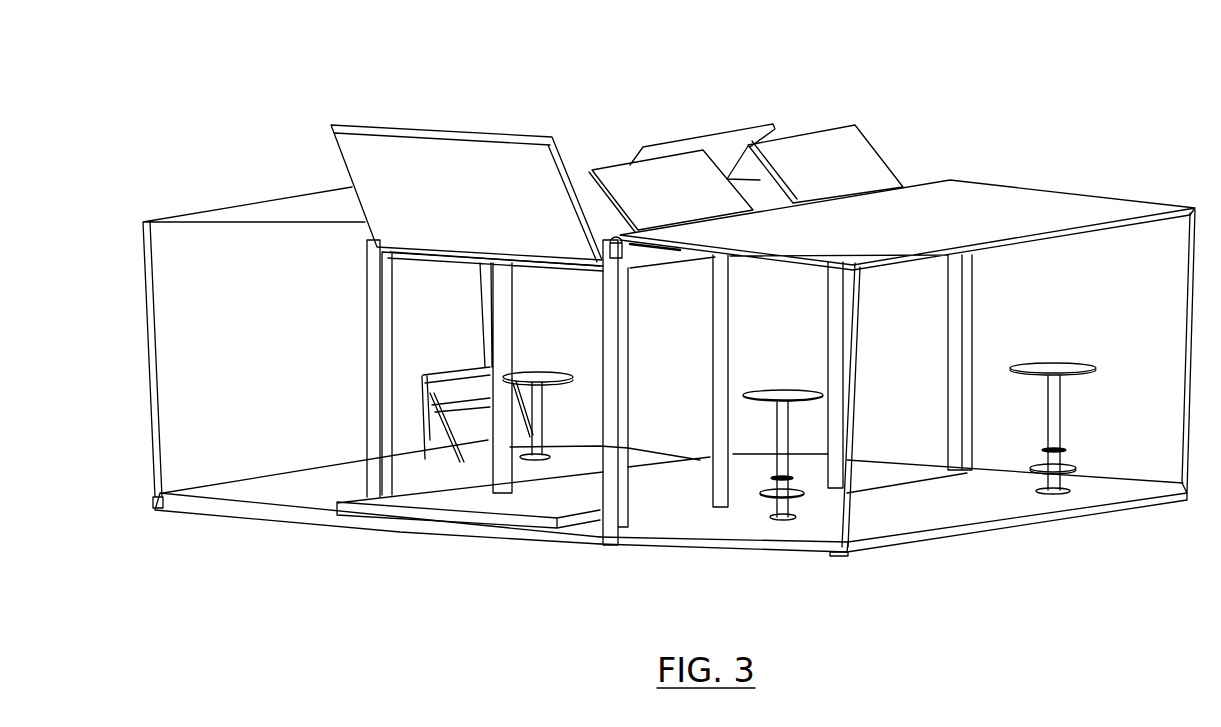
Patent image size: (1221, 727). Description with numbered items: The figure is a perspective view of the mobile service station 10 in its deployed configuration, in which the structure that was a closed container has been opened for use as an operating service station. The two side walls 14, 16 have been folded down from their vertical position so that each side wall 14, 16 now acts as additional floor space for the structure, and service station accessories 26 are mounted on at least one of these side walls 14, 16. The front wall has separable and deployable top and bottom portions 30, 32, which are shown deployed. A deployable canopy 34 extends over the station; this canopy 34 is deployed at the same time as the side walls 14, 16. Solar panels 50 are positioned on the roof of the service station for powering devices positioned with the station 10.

The mobile service station 10 is at (296, 160).
The side wall 14 is at (803, 552).
The side wall 16 is at (268, 515).
The service station accessories 26 is at (778, 503).
The top portion of front wall 30 is at (478, 173).
The bottom portion of front wall 32 is at (535, 535).
The deployable canopy 34 is at (977, 217).
The solar panels 50 is at (663, 187).